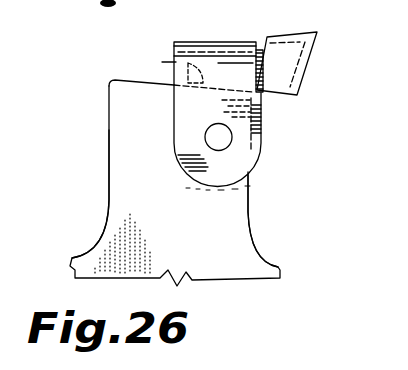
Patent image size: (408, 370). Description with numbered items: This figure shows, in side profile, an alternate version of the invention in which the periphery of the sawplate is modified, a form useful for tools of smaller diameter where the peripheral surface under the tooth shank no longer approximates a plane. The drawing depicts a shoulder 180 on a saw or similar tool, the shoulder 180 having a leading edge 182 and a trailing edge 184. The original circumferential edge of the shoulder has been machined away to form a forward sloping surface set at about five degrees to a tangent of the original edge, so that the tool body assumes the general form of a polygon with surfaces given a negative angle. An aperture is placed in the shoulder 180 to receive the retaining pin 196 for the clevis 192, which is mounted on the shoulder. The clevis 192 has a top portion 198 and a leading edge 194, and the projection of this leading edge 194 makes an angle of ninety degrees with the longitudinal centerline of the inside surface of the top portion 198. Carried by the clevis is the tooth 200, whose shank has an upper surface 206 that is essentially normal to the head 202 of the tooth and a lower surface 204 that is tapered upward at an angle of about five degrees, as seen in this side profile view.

The shoulder 180 is at (194, 230).
The leading edge 182 is at (250, 213).
The trailing edge 184 is at (109, 193).
The clevis 192 is at (173, 125).
The leading edge of the clevis 194 is at (265, 110).
The retaining pin 196 is at (218, 142).
The top portion 198 is at (192, 42).
The tooth 200 is at (312, 66).
The head 202 is at (292, 32).
The lower surface 204 is at (167, 62).
The upper surface 206 is at (228, 41).